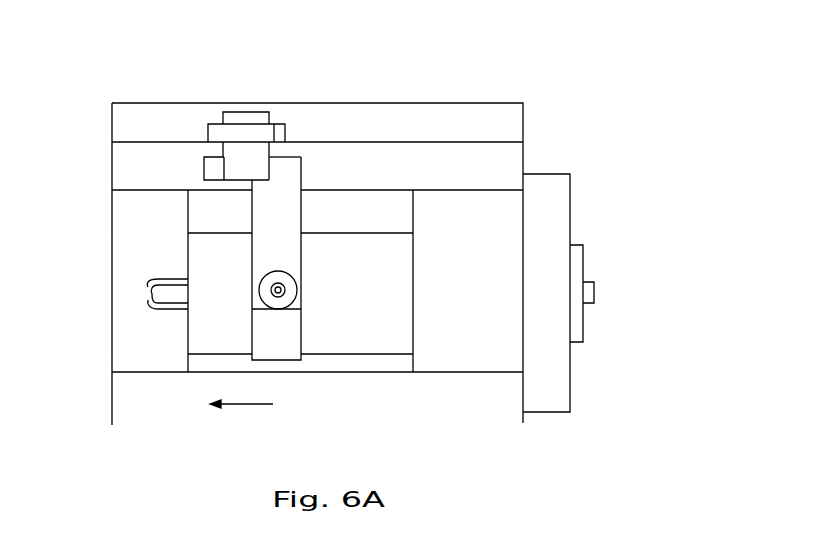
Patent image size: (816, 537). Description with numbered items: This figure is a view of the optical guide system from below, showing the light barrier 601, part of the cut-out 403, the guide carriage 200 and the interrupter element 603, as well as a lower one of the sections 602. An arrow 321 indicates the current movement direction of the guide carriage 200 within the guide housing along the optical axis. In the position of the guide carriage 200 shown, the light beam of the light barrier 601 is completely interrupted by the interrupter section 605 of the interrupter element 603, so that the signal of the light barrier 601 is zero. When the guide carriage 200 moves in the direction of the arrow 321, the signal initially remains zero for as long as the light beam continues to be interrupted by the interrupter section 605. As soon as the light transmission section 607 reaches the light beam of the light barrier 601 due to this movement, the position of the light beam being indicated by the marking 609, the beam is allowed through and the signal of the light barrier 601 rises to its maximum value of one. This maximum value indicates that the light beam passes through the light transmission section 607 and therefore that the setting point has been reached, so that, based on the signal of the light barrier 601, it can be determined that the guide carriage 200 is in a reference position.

The guide carriage 200 is at (327, 337).
The arrow 321 is at (240, 405).
The cut-out 403 is at (157, 293).
The light barrier 601 is at (248, 95).
The section 602 is at (233, 155).
The interrupter element 603 is at (302, 201).
The interrupter section 605 is at (213, 169).
The light transmission section 607 is at (292, 172).
The marking 609 is at (244, 173).